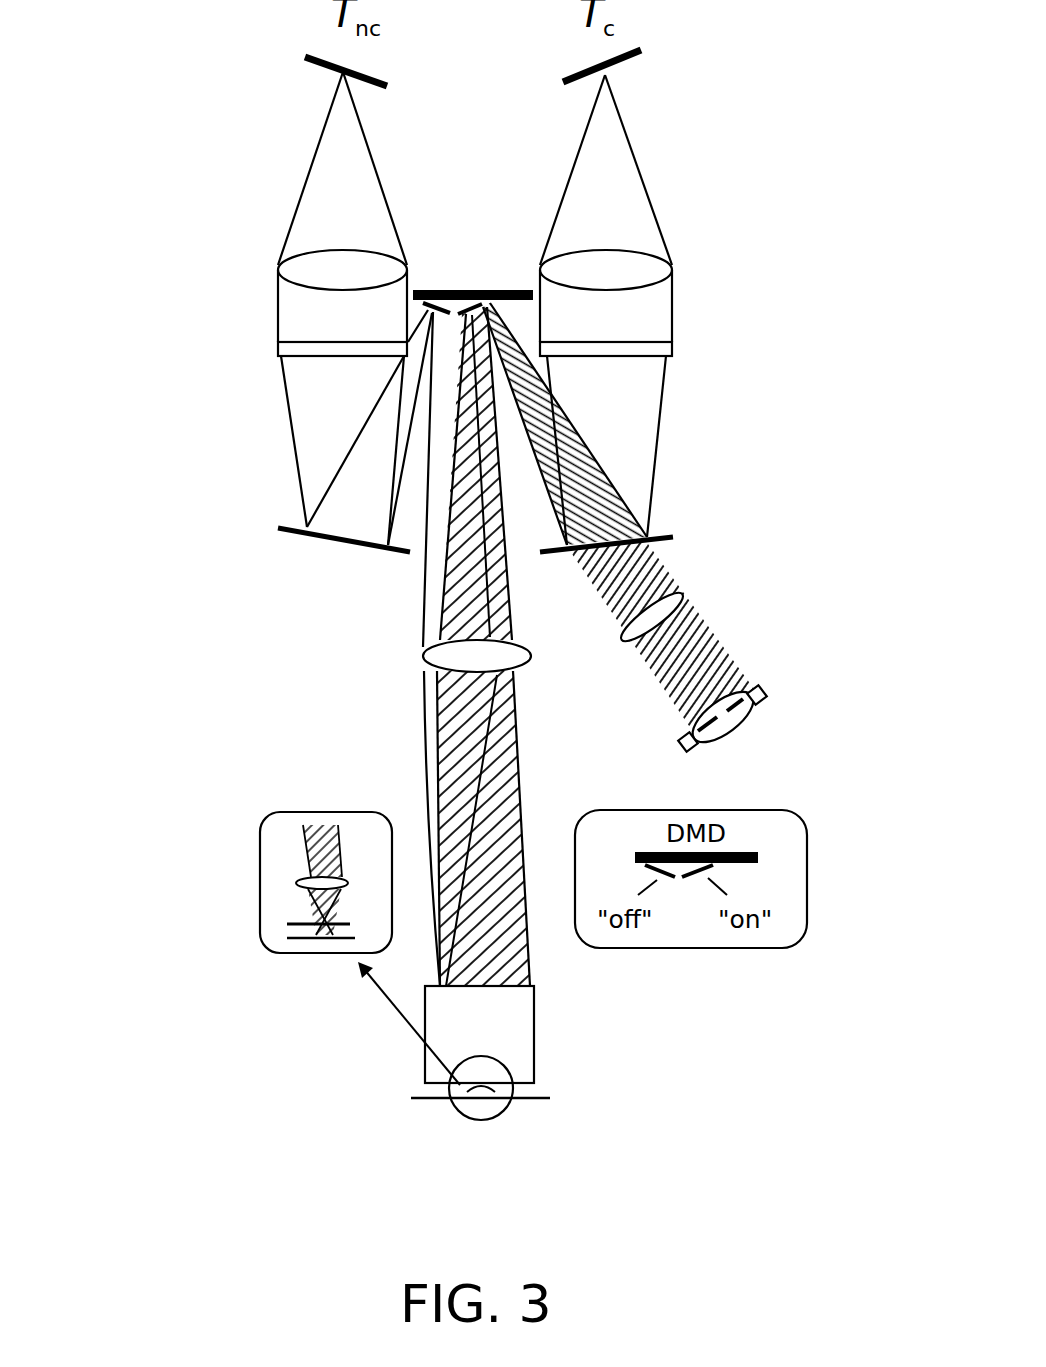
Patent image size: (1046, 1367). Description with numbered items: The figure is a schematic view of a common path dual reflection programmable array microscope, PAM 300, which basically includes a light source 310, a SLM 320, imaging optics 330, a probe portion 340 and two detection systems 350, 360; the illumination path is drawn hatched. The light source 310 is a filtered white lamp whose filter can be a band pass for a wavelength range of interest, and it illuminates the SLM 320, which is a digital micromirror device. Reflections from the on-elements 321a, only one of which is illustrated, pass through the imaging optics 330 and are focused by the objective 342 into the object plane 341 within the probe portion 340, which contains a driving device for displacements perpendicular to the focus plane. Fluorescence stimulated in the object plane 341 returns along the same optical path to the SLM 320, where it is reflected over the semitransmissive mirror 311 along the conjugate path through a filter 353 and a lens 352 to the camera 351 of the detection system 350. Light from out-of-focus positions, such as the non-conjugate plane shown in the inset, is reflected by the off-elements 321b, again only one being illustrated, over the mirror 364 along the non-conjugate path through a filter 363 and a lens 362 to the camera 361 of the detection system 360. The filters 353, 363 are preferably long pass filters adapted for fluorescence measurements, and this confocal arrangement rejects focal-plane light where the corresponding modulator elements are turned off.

The common path dual reflection PAM 300 is at (123, 733).
The light source 310 is at (742, 646).
The semitransmissive mirror 311 is at (663, 546).
The SLM 320 is at (476, 275).
The on-elements 321a is at (469, 277).
The off-elements 321b is at (427, 278).
The imaging optics 330 is at (414, 658).
The probe portion 340 is at (625, 1126).
The object plane 341 is at (298, 915).
The objective 342 is at (520, 1028).
The detection system 350 is at (900, 228).
The camera 351 is at (677, 60).
The lens 352 is at (666, 280).
The filter 353 is at (666, 362).
The detection system 360 is at (140, 233).
The camera 361 is at (292, 67).
The lens 362 is at (303, 282).
The filter 363 is at (303, 364).
The mirror 364 is at (304, 547).